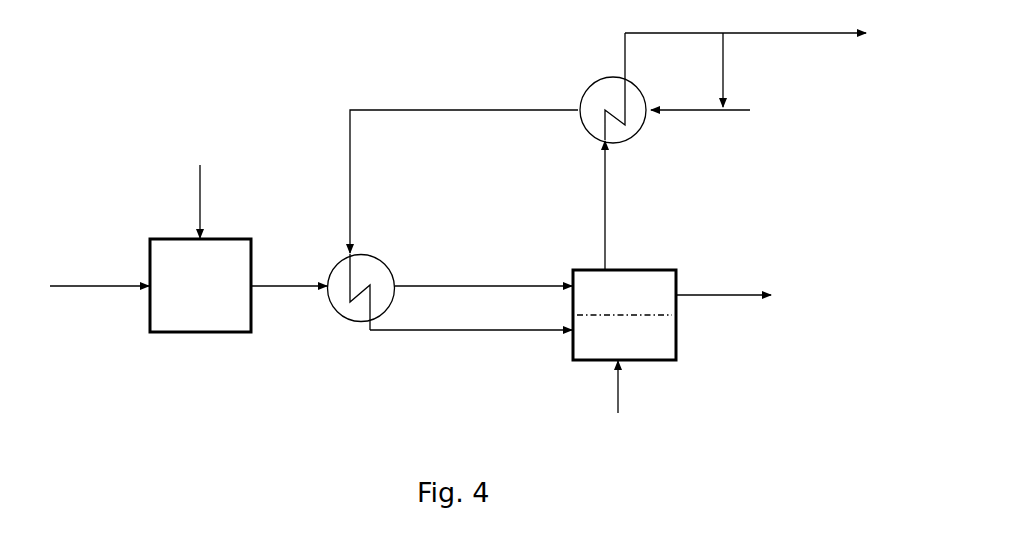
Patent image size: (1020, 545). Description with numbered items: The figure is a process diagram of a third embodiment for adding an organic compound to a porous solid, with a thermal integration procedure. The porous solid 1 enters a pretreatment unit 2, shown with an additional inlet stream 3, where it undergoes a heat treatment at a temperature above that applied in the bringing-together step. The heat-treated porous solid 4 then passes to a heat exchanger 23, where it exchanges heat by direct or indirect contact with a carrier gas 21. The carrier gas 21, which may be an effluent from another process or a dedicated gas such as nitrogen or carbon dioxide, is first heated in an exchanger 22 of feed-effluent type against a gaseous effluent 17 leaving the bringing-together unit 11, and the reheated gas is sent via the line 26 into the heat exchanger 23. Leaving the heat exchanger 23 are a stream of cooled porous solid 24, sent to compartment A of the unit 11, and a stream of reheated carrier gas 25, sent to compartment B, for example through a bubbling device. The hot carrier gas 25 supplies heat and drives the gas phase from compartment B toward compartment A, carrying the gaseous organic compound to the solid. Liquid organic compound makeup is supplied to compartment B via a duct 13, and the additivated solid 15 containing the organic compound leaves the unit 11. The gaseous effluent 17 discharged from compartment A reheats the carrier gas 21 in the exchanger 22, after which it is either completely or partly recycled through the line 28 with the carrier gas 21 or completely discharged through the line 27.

The porous solid 1 is at (90, 288).
The pretreatment unit 2 is at (207, 333).
The additive stream 3 is at (200, 205).
The porous solid resulting from the pretreatment 4 is at (297, 287).
The bringing-together unit 11 is at (657, 362).
The duct 13 is at (610, 398).
The solid containing the organic compound 15 is at (725, 296).
The gaseous effluent 17 is at (603, 212).
The carrier gas 21 is at (693, 112).
The exchanger of feed-effluent type 22 is at (590, 86).
The heat exchanger 23 is at (377, 259).
The stream of cooled porous solid 24 is at (462, 286).
The stream of reheated carrier gas 25 is at (440, 331).
The line 26 is at (460, 111).
The line 27 is at (795, 34).
The line 28 is at (720, 66).